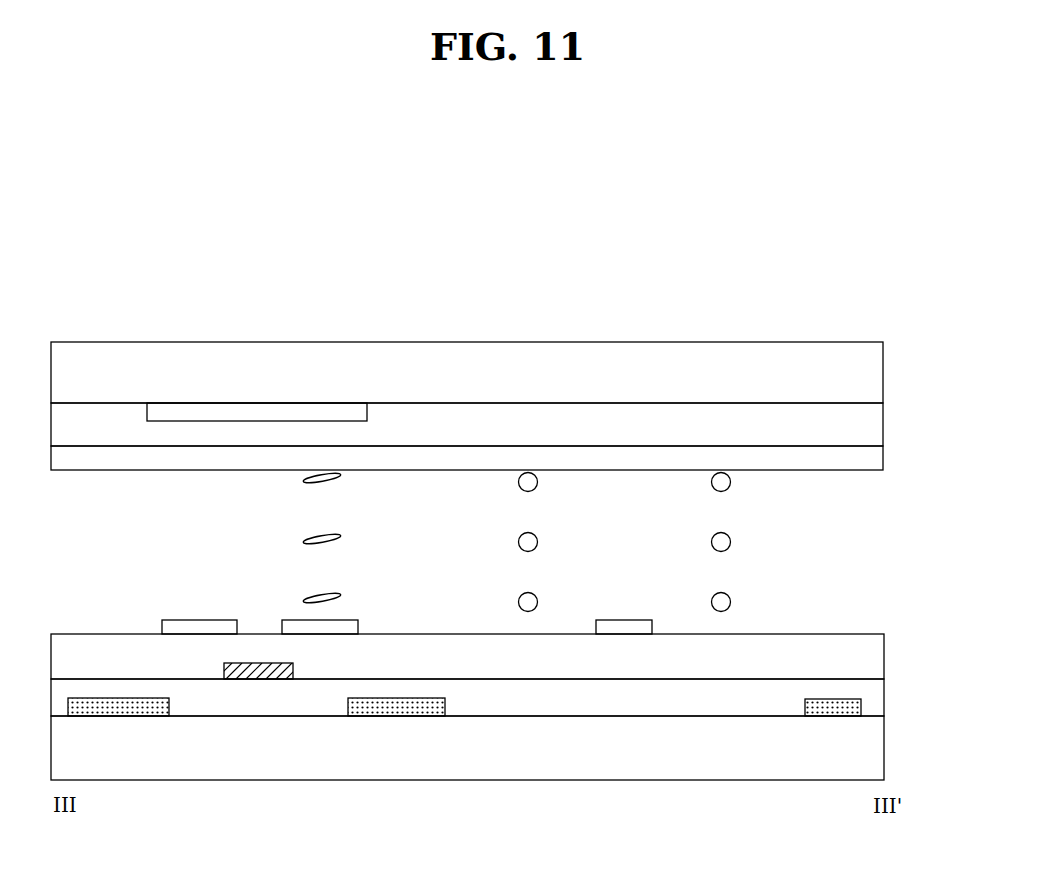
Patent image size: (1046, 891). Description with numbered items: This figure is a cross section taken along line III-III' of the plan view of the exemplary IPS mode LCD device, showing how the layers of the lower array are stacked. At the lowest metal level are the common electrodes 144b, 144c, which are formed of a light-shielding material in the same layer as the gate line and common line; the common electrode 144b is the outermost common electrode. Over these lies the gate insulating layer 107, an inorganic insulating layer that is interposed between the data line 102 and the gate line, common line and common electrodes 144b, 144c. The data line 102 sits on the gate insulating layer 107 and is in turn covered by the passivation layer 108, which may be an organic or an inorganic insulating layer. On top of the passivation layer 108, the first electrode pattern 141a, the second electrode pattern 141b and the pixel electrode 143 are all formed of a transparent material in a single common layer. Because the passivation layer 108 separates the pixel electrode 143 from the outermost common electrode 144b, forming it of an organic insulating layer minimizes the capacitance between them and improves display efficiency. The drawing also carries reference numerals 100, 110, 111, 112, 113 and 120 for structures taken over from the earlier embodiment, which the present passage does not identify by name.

The lower substrate 100 is at (885, 750).
The data line 102 is at (258, 665).
The gate insulating layer 107 is at (885, 699).
The passivation layer 108 is at (885, 657).
The upper substrate 110 is at (884, 375).
The black matrix / light shielding layer 111 is at (261, 413).
The color filter layer 112 is at (884, 427).
The common electrode layer 113 is at (884, 459).
The spacer 120 is at (729, 485).
The first electrode pattern 141a is at (198, 628).
The second electrode pattern 141b is at (342, 627).
The pixel electrode 143 is at (623, 627).
The outermost common electrode 144b is at (118, 716).
The common electrode 144c is at (830, 716).